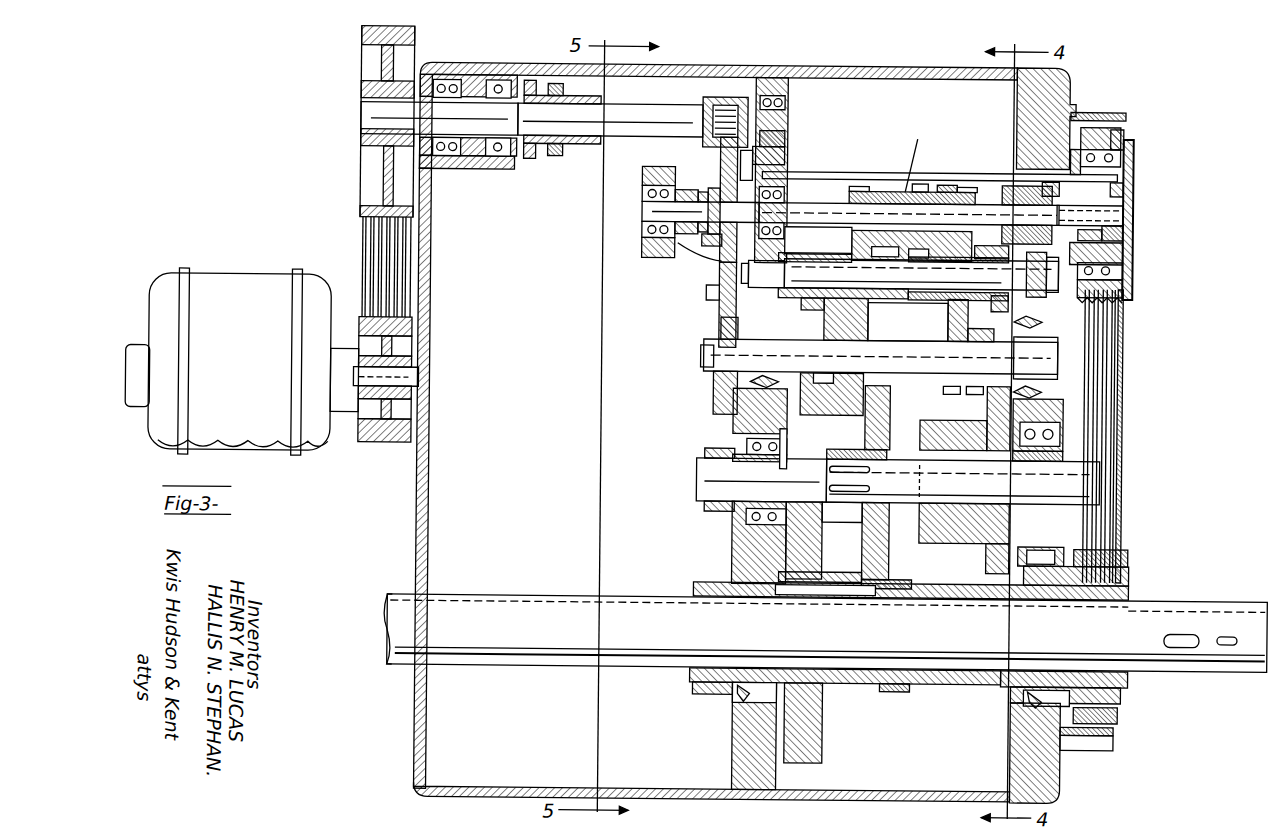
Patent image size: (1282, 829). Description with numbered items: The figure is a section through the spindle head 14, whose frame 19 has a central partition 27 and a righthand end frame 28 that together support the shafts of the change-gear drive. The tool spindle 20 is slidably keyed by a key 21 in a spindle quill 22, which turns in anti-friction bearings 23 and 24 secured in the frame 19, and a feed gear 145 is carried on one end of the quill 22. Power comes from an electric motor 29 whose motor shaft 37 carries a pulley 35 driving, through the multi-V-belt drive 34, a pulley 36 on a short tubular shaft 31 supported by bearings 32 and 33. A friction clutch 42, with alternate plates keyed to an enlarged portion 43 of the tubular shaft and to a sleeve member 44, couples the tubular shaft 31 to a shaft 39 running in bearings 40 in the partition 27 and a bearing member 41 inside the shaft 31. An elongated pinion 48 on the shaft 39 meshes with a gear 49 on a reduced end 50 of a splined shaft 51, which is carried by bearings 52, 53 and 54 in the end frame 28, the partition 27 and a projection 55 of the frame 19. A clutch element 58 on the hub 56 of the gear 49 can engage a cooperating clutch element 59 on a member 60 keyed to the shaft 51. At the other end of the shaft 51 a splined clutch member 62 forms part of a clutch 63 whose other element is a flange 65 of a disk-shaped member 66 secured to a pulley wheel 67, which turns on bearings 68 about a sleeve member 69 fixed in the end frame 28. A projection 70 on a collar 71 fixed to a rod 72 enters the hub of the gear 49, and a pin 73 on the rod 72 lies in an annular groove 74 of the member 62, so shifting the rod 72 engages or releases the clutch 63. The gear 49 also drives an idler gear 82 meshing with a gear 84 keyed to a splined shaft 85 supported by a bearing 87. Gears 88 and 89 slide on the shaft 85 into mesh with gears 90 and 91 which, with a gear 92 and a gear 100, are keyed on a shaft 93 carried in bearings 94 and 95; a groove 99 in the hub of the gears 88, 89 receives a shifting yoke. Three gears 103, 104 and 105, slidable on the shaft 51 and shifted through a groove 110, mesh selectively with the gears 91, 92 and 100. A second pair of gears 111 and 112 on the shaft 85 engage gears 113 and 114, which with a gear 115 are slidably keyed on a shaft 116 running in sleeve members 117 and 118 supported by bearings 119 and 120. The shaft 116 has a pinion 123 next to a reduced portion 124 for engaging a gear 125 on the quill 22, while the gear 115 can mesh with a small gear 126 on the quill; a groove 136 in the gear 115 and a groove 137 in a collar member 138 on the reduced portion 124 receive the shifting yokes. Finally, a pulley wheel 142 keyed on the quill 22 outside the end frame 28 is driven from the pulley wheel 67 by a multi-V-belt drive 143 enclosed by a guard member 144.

The spindle head 14 is at (427, 488).
The frame 19 is at (908, 790).
The tool spindle 20 is at (550, 596).
The key 21 is at (780, 596).
The spindle quill 22 is at (970, 683).
The anti-friction bearing 23 is at (740, 700).
The anti-friction bearing 24 is at (1055, 664).
The partition 27 is at (786, 91).
The righthand end frame 28 is at (1065, 90).
The electric motor 29 is at (235, 287).
The short tubular shaft 31 is at (360, 126).
The anti-friction bearing 32 is at (436, 172).
The anti-friction bearing 33 is at (495, 172).
The flexible multi-V-belt drive 34 is at (370, 253).
The pulley 35 is at (413, 333).
The pulley 36 is at (360, 211).
The motor shaft 37 is at (418, 380).
The shaft 39 is at (643, 117).
The anti-friction bearings 40 is at (786, 104).
The bearing member 41 is at (478, 160).
The friction clutch 42 is at (553, 156).
The enlarged portion 43 is at (526, 81).
The sleeve member 44 is at (583, 97).
The elongated pinion 48 is at (705, 97).
The gear 49 is at (719, 164).
The reduced end 50 is at (708, 236).
The splined shaft 51 is at (983, 204).
The anti-friction bearing 52 is at (1027, 213).
The anti-friction bearing 53 is at (785, 190).
The anti-friction bearing 54 is at (642, 192).
The projection 55 is at (646, 258).
The hub 56 is at (706, 250).
The clutch element 58 is at (698, 236).
The cooperating clutch element 59 is at (686, 189).
The member 60 is at (740, 150).
The clutch member 62 is at (1131, 226).
The clutch 63 is at (1122, 206).
The flange 65 is at (1131, 240).
The disk-shaped member 66 is at (1125, 146).
The pulley wheel 67 is at (1115, 130).
The anti-friction bearings 68 is at (1118, 296).
The sleeve member 69 is at (1123, 281).
The projection 70 is at (786, 159).
The collar 71 is at (786, 139).
The rod 72 is at (890, 170).
The pin 73 is at (1128, 186).
The annular groove 74 is at (1122, 255).
The idler gear 82 is at (718, 300).
The gear 84 is at (712, 395).
The splined shaft 85 is at (901, 345).
The anti-friction bearing 87 is at (1042, 318).
The gear 88 is at (823, 316).
The gear 89 is at (907, 322).
The gear 90 is at (850, 240).
The gear 91 is at (885, 249).
The gear 92 is at (922, 250).
The shaft 93 is at (962, 270).
The anti-friction bearing 94 is at (770, 272).
The anti-friction bearing 95 is at (1039, 274).
The groove 99 is at (831, 394).
The gear 100 is at (984, 250).
The gear 103 is at (856, 189).
The gear 104 is at (940, 182).
The gear 105 is at (963, 184).
The groove 110 is at (926, 152).
The gear 111 is at (948, 305).
The gear 112 is at (985, 318).
The gear 113 is at (933, 420).
The gear 114 is at (990, 417).
The gear 115 is at (884, 401).
The shaft 116 is at (1093, 466).
The sleeve member 117 is at (738, 530).
The sleeve member 118 is at (1065, 433).
The anti-friction bearing 119 is at (735, 422).
The anti-friction bearing 120 is at (1040, 457).
The pinion 123 is at (798, 472).
The reduced portion 124 is at (800, 440).
The gear 125 is at (826, 740).
The small gear 126 is at (896, 690).
The groove 136 is at (848, 522).
The groove 137 is at (708, 512).
The collar member 138 is at (697, 464).
The pulley wheel 142 is at (1128, 564).
The flexible multi-V-belt drive 143 is at (1110, 382).
The guard member 144 is at (1122, 334).
The feed gear 145 is at (720, 695).